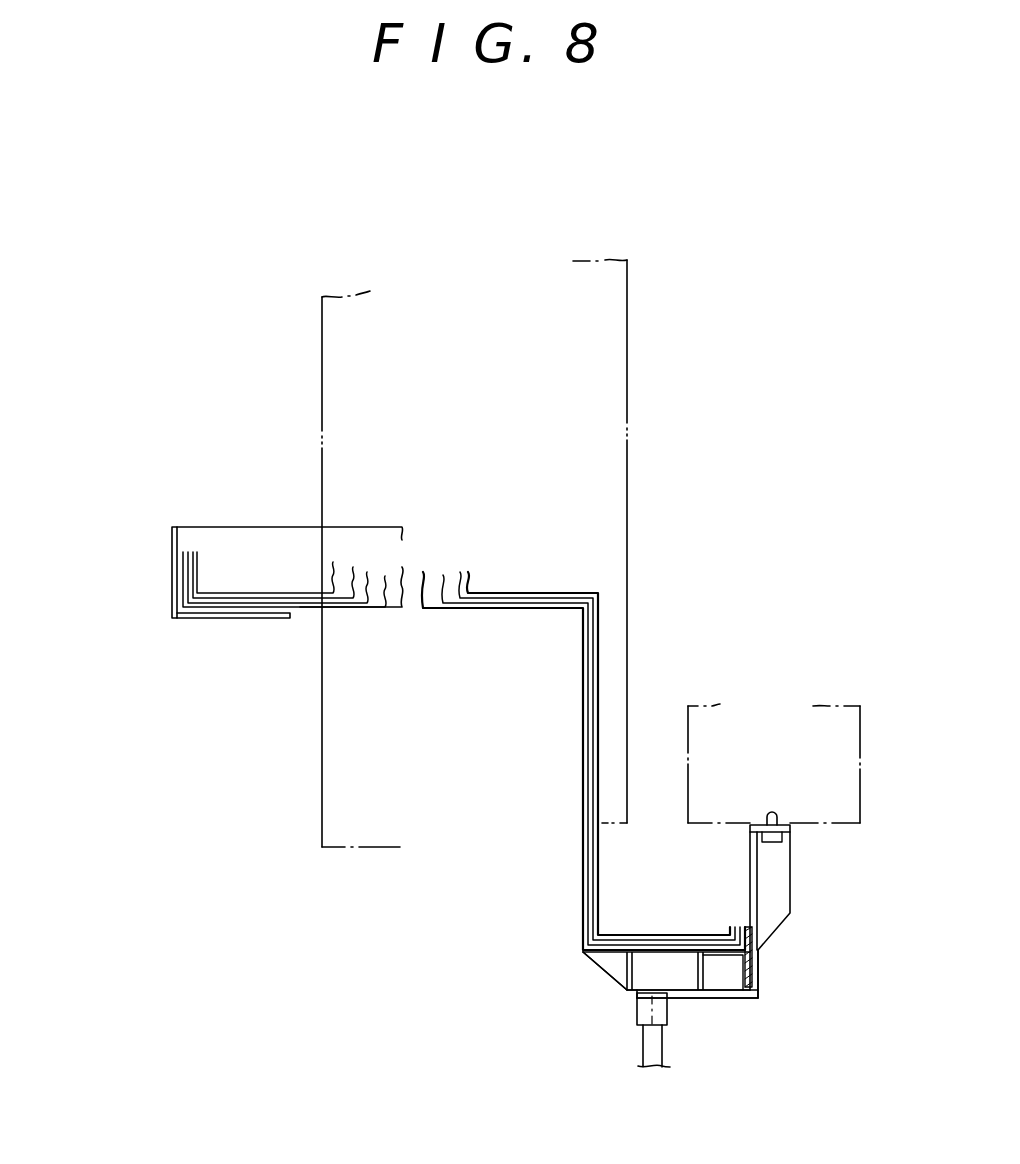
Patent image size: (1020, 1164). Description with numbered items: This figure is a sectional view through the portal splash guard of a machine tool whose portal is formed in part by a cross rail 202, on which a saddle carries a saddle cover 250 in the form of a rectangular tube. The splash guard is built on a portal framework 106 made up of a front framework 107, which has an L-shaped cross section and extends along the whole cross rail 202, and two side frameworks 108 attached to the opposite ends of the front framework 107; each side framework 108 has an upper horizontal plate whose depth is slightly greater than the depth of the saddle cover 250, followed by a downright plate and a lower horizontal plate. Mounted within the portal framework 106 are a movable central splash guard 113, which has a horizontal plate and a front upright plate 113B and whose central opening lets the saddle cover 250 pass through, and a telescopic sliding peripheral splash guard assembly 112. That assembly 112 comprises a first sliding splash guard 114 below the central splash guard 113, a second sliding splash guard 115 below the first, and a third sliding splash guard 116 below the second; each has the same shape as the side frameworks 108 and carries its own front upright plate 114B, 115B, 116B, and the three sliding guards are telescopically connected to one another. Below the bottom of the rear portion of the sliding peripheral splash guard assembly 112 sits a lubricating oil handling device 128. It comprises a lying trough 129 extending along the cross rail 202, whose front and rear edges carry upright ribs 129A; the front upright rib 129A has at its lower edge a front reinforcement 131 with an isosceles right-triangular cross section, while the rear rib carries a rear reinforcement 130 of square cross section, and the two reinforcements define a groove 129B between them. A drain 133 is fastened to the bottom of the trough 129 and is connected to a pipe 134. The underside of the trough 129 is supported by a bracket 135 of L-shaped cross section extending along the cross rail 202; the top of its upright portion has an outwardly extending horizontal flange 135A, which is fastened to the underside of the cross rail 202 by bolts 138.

The portal framework 106 is at (159, 577).
The front framework 107 is at (170, 538).
The side framework 108 is at (378, 523).
The sliding peripheral splash guard assembly 112 is at (497, 579).
The movable central splash guard 113 is at (602, 608).
The first sliding splash guard 114 is at (597, 657).
The second sliding splash guard 115 is at (590, 675).
The third sliding splash guard 116 is at (583, 722).
The front upright plate 113B is at (198, 553).
The front upright plate 114B is at (195, 553).
The front upright plate 115B is at (190, 552).
The front upright plate 116B is at (187, 550).
The lubricating oil handling device 128 is at (521, 956).
The trough 129 is at (608, 982).
The upright rib 129A is at (580, 930).
The groove 129B is at (680, 985).
The rear reinforcement 130 is at (728, 975).
The front reinforcement 131 is at (607, 962).
The drain 133 is at (635, 1010).
The pipe 134 is at (643, 1050).
The bracket 135 is at (748, 862).
The horizontal flange 135A is at (783, 820).
The bolts 138 is at (772, 842).
The cross rail 202 is at (826, 702).
The saddle cover 250 is at (627, 337).